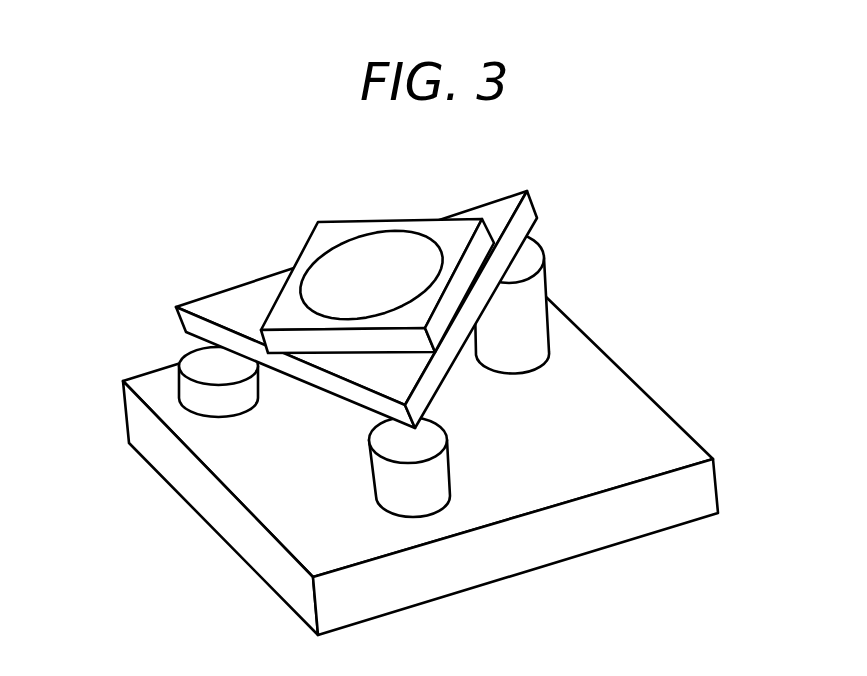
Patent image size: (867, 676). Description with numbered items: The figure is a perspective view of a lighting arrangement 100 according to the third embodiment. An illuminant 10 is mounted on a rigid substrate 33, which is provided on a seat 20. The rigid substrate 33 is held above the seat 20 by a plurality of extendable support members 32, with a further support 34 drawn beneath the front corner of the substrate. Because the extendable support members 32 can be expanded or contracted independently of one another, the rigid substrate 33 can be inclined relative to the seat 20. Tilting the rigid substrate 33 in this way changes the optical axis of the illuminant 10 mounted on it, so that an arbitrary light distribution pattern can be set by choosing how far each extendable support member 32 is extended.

The electronic component assembly 100 is at (667, 186).
The illuminant 10 is at (352, 267).
The seat 20 is at (640, 381).
The extendable support member 32 is at (213, 397).
The rigid substrate 33 is at (232, 303).
The front support post 34 is at (420, 485).